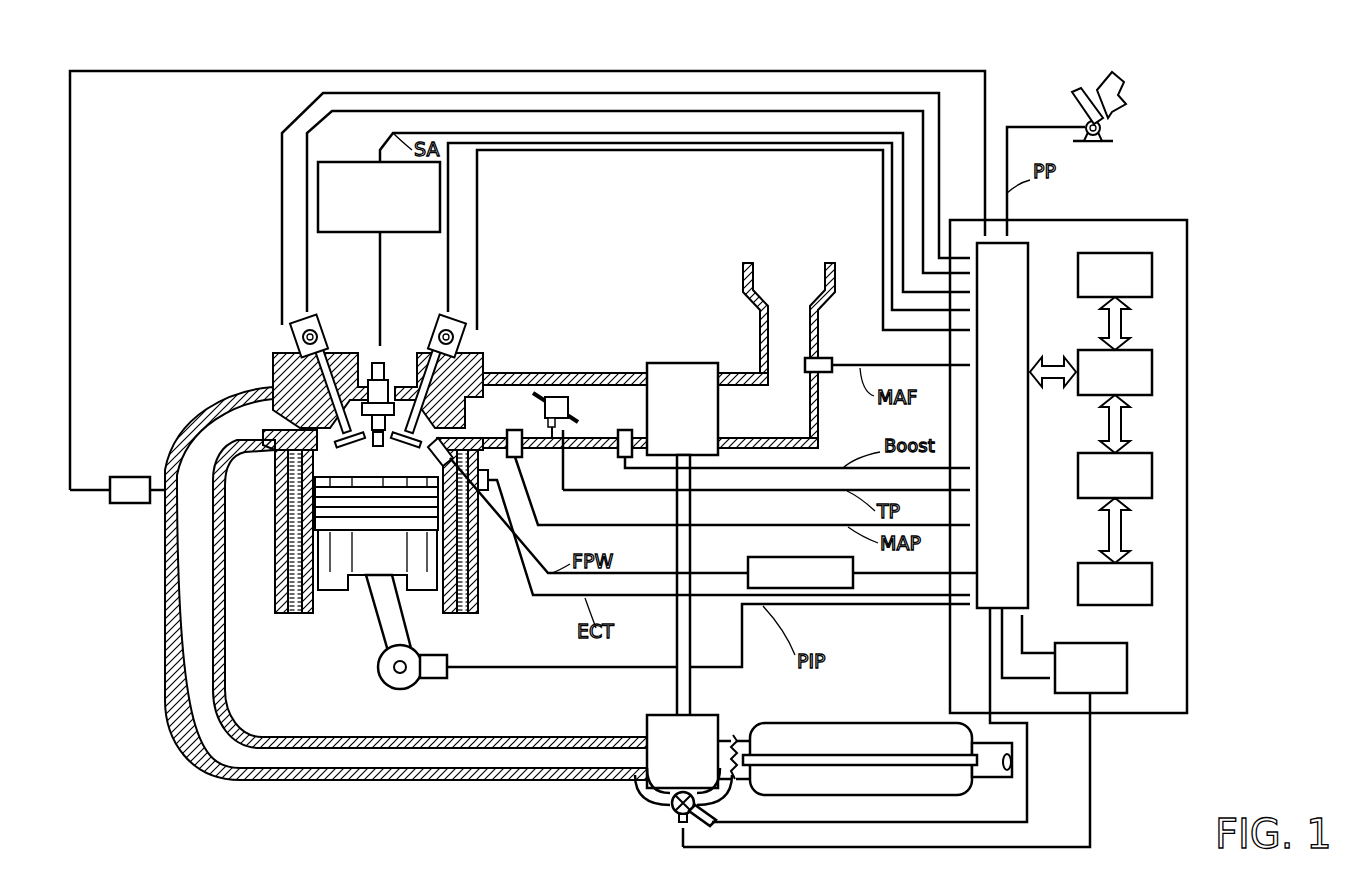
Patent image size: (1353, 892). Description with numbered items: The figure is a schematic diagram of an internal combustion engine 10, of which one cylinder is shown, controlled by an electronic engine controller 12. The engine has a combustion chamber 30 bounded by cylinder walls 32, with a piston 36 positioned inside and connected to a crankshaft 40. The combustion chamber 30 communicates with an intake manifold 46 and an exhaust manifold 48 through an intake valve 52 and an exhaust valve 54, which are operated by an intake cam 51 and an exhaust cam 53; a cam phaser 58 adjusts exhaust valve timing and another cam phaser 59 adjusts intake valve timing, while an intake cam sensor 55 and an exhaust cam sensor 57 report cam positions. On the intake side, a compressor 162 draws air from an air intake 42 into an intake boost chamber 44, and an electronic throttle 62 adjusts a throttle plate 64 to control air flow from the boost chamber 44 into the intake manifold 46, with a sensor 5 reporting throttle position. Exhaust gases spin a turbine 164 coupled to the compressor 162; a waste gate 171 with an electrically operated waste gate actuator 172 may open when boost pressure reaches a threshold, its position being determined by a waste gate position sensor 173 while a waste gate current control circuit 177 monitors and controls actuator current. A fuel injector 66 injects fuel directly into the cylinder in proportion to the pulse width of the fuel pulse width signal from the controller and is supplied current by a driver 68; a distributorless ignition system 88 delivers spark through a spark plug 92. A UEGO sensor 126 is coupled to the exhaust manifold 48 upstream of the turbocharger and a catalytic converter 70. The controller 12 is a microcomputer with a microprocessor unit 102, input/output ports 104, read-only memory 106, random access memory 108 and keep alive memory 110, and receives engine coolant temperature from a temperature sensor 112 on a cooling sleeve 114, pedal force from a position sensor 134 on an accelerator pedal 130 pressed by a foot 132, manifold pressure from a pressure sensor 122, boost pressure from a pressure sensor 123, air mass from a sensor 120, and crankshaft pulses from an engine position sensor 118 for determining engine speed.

The throttle position sensor 5 is at (526, 437).
The internal combustion engine 10 is at (200, 300).
The electronic engine controller 12 is at (1177, 222).
The combustion chamber 30 is at (290, 562).
The cylinder walls 32 is at (318, 613).
The piston 36 is at (362, 565).
The crankshaft 40 is at (385, 688).
The air intake 42 is at (776, 355).
The intake boost chamber 44 is at (603, 411).
The intake manifold 46 is at (565, 410).
The exhaust manifold 48 is at (406, 583).
The intake cam 51 is at (434, 334).
The intake valve 52 is at (388, 432).
The exhaust cam 53 is at (322, 332).
The exhaust valve 54 is at (338, 422).
The intake cam sensor 55 is at (456, 346).
The exhaust cam sensor 57 is at (296, 334).
The cam phaser 58 is at (308, 322).
The cam phaser 59 is at (440, 320).
The electronic throttle 62 is at (562, 393).
The throttle plate 64 is at (541, 397).
The fuel injector 66 is at (445, 448).
The driver 68 is at (782, 557).
The catalytic converter 70 is at (800, 723).
The distributorless ignition system 88 is at (333, 162).
The spark plug 92 is at (375, 378).
The microprocessor unit 102 is at (1152, 368).
The input/output ports 104 is at (1030, 250).
The read-only memory 106 is at (1152, 270).
The random access memory 108 is at (1152, 474).
The keep alive memory 110 is at (1152, 583).
The temperature sensor 112 is at (492, 492).
The cooling sleeve 114 is at (468, 548).
The engine position sensor 118 is at (440, 680).
The air mass sensor 120 is at (887, 386).
The pressure sensor 122 is at (524, 458).
The pressure sensor 123 is at (618, 446).
The Universal Exhaust Gas Oxygen sensor 126 is at (116, 505).
The accelerator pedal 130 is at (1132, 107).
The foot 132 is at (1122, 90).
The position sensor 134 is at (1110, 128).
The compressor 162 is at (682, 409).
The turbine 164 is at (682, 751).
The waste gate 171 is at (672, 813).
The waste gate actuator 172 is at (680, 838).
The waste gate position sensor 173 is at (716, 821).
The waste gate current control circuit 177 is at (1064, 650).